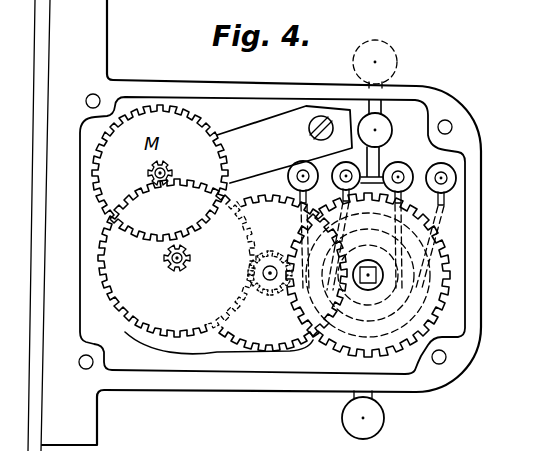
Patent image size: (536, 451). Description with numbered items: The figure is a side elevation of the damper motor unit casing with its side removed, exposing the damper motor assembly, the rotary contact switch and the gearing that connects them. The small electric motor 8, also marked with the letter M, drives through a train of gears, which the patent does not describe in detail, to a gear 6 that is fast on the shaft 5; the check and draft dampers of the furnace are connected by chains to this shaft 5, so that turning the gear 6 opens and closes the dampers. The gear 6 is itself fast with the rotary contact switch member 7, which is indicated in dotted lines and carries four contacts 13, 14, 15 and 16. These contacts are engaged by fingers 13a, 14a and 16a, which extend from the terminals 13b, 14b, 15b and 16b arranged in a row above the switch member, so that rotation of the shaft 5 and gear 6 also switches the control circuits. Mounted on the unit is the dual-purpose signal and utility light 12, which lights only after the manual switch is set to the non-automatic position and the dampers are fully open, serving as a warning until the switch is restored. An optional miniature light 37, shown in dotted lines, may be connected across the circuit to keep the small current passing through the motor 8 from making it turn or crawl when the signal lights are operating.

The shaft 5 is at (358, 287).
The gear 6 is at (446, 273).
The rotary contact switch member 7 is at (165, 113).
The electric motor 8 is at (216, 355).
The signal and utility light 12 is at (384, 419).
The contact 13 is at (303, 300).
The finger 13a is at (332, 215).
The terminal 13b is at (297, 178).
The contact 14 is at (394, 284).
The finger 14a is at (417, 248).
The terminal 14b is at (399, 169).
The contact 15 is at (425, 285).
The terminal 15b is at (440, 171).
The contact 16 is at (300, 309).
The finger 16a is at (335, 232).
The terminal 16b is at (343, 181).
The miniature light 37 is at (397, 62).